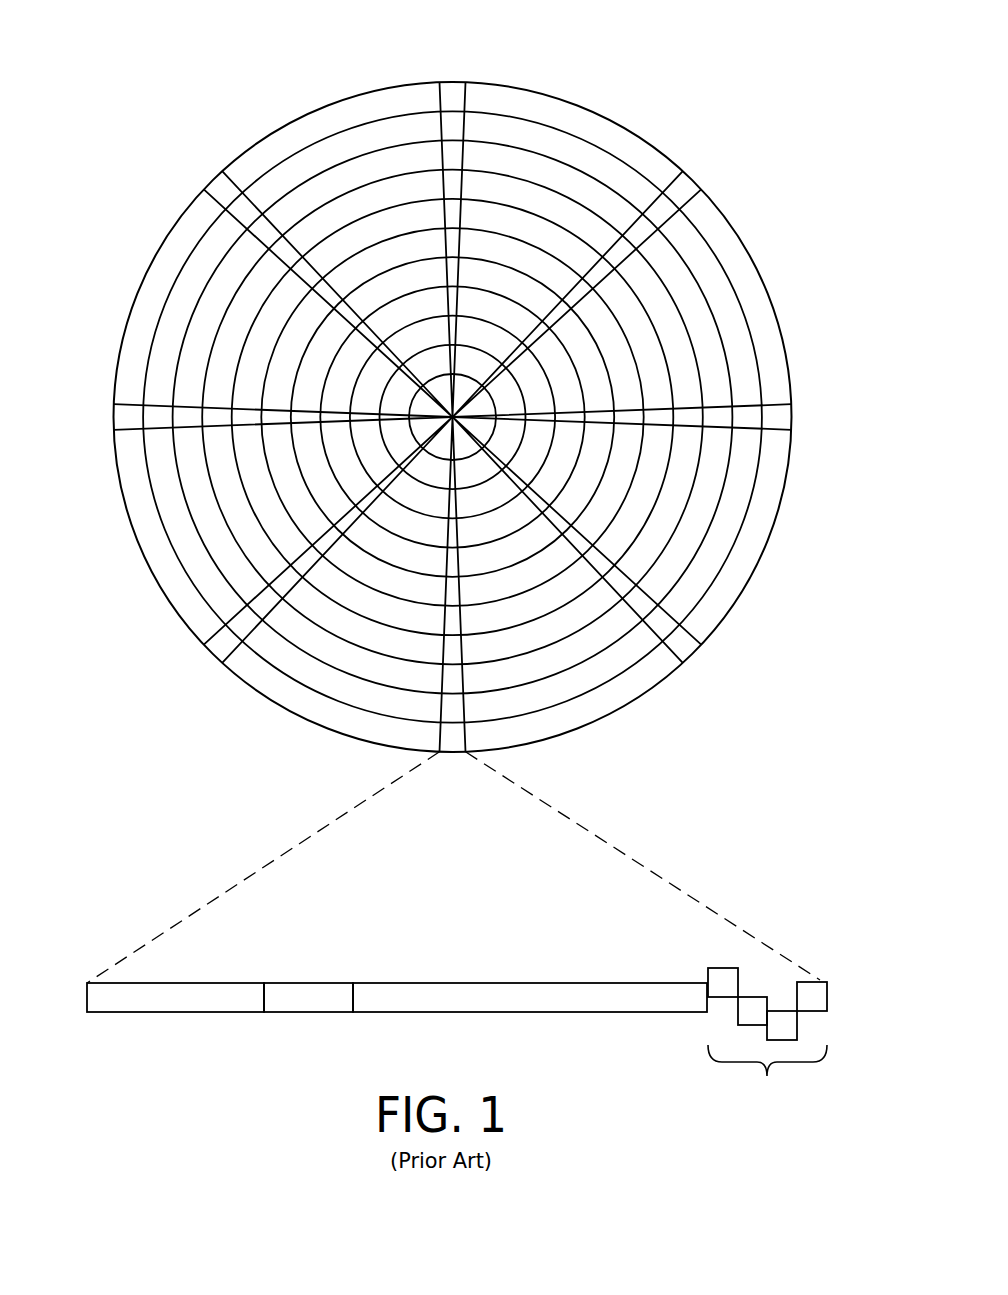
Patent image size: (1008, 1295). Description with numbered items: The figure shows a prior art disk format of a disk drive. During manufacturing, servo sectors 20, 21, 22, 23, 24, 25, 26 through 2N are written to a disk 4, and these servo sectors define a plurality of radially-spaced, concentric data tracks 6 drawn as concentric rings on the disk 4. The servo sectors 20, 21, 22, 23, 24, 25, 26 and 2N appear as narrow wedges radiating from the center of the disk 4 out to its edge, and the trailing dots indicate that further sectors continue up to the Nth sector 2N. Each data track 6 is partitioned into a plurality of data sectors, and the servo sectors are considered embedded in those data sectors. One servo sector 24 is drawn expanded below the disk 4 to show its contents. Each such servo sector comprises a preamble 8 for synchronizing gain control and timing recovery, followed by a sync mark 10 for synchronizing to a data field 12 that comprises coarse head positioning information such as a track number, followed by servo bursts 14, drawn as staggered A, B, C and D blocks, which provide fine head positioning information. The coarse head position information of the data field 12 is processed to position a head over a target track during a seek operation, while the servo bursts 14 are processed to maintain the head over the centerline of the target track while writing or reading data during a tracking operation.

The disk 4 is at (203, 88).
The data track 6 is at (576, 128).
The servo sector 20 is at (452, 92).
The servo sector 21 is at (690, 183).
The servo sector 22 is at (793, 417).
The servo sector 23 is at (693, 660).
The servo sector 24 is at (303, 828).
The servo sector 25 is at (214, 657).
The servo sector 26 is at (113, 417).
The servo sector 2N is at (216, 185).
The preamble 8 is at (157, 1014).
The sync mark 10 is at (305, 1014).
The data field 12 is at (517, 1013).
The servo bursts 14 is at (697, 950).